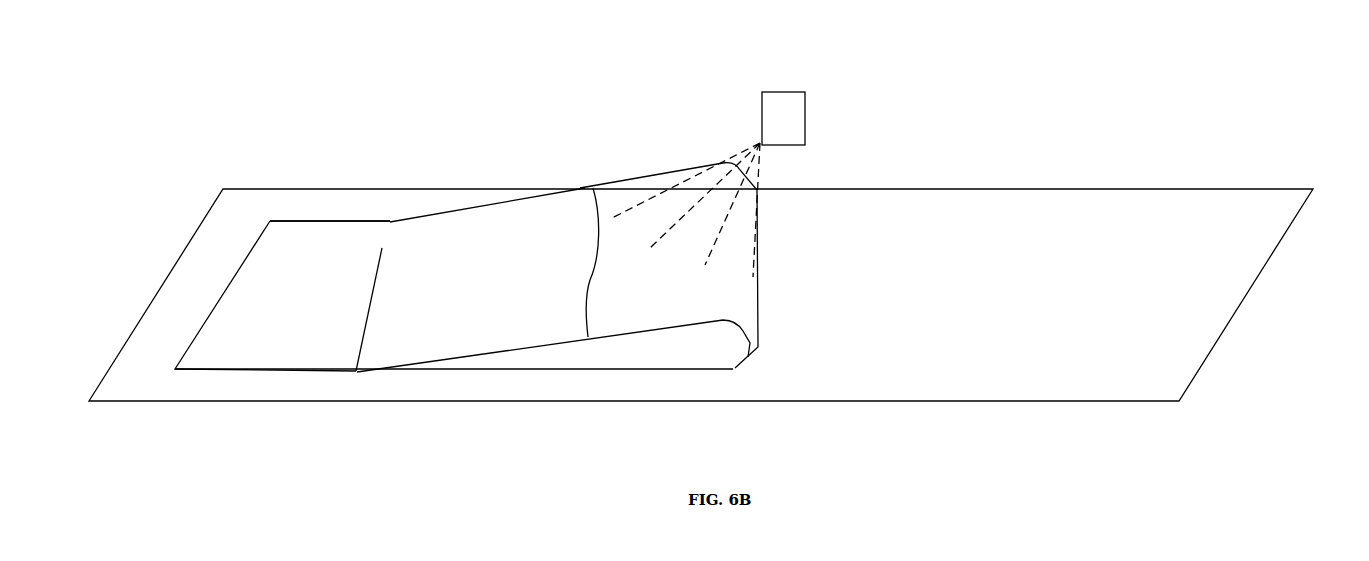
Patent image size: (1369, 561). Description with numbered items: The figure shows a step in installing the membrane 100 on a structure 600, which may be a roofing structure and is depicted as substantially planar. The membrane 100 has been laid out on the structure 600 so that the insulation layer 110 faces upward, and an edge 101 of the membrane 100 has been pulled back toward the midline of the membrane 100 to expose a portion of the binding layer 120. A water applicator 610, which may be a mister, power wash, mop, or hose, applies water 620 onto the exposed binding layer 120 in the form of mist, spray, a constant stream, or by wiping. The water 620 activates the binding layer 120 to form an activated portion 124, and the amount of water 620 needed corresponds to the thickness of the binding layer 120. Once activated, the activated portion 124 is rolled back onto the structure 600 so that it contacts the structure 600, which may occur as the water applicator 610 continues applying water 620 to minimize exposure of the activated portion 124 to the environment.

The membrane 100 is at (240, 220).
The edge 101 is at (382, 248).
The insulation layer 110 is at (301, 298).
The binding layer 120 is at (493, 285).
The activated portion 124 is at (671, 307).
The structure 600 is at (982, 295).
The water applicator 610 is at (808, 110).
The water 620 is at (760, 183).